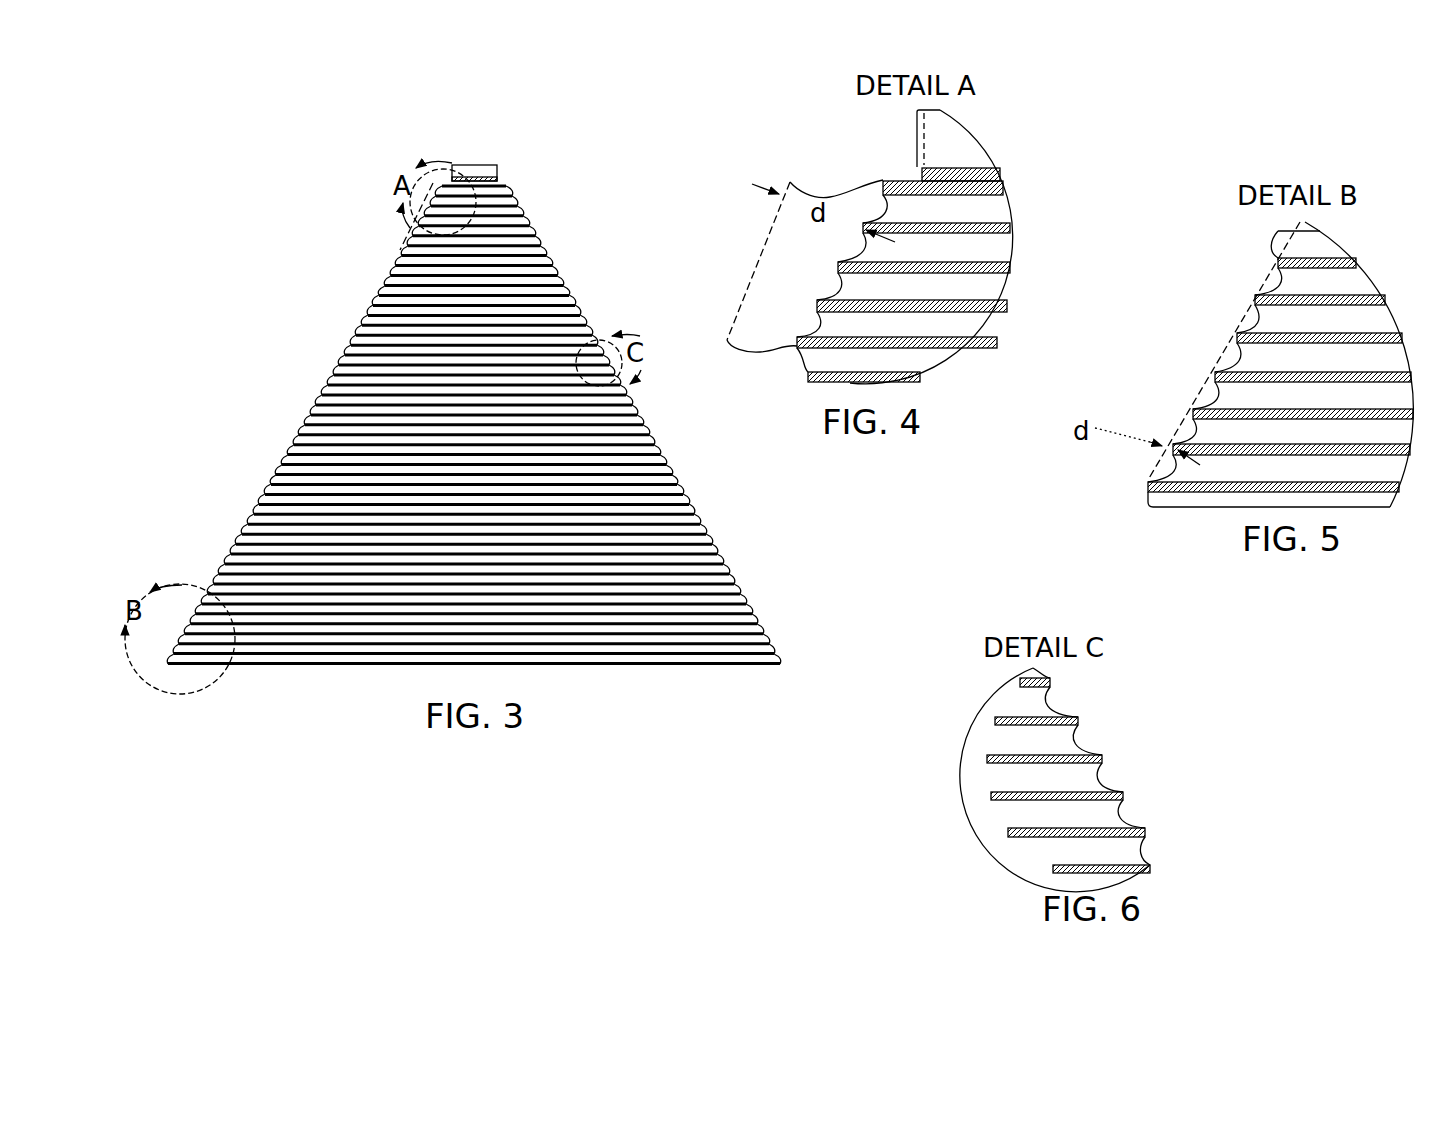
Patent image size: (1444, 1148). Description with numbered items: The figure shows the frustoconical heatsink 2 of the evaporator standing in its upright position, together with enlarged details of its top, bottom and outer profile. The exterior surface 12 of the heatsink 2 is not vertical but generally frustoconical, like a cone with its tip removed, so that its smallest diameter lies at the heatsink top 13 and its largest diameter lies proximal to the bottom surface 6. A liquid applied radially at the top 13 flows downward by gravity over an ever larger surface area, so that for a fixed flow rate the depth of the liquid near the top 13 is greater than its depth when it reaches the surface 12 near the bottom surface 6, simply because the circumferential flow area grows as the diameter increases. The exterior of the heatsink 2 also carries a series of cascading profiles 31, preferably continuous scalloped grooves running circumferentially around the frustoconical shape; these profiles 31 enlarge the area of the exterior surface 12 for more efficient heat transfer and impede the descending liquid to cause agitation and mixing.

In FIG. 3, the heatsink 2 is at (352, 246).
In FIG. 3, the bottom surface 6 is at (730, 670).
In FIG. 3, the exterior surface 12 is at (678, 483).
In FIG. 6, the exterior surface 12 is at (1078, 720).
In FIG. 3, the heatsink top 13 is at (502, 182).
In FIG. 3, the cascading profiles 31 is at (695, 512).
In FIG. 6, the cascading profiles 31 is at (1125, 815).